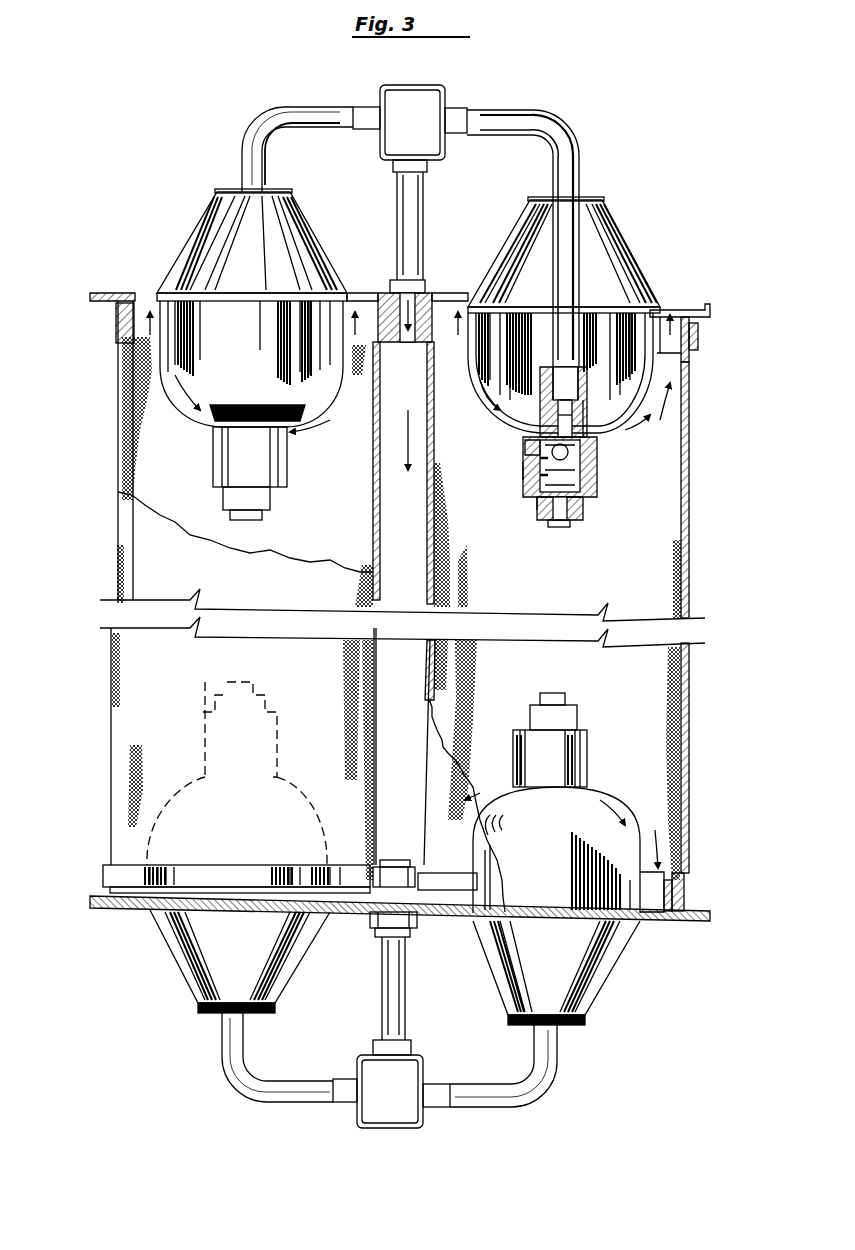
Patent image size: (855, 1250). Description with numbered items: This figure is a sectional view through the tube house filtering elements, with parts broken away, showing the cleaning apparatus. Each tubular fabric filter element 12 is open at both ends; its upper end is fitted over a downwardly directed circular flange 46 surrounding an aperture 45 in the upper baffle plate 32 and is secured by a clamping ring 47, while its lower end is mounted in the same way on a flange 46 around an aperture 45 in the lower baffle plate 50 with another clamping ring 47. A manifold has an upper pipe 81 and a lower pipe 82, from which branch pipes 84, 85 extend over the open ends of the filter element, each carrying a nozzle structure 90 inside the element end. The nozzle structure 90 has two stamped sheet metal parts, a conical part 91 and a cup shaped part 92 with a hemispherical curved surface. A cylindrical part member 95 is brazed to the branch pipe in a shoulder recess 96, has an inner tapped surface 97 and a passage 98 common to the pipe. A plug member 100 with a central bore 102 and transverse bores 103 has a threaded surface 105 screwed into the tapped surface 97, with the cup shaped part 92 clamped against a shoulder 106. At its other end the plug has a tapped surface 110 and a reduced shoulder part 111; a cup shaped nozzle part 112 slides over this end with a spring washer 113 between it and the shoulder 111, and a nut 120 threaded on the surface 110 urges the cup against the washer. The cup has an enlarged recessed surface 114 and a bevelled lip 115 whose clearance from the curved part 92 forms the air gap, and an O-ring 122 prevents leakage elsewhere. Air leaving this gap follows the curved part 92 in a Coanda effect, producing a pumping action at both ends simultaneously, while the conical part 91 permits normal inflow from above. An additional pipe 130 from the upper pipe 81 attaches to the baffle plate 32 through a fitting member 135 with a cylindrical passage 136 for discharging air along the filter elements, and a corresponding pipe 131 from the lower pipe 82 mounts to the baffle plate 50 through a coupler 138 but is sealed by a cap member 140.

The filter element 12 is at (690, 490).
The baffle plate 32 is at (373, 295).
The aperture 45 is at (684, 312).
The circular flange 46 is at (691, 376).
The clamping ring 47 is at (699, 336).
The baffle plate 50 is at (105, 908).
The upper pipe 81 is at (443, 88).
The lower pipe 82 is at (418, 1130).
The branch pipe 84 is at (272, 110).
The branch pipe 85 is at (232, 1082).
The nozzle structure 90 is at (640, 246).
The conical stamped part 91 is at (640, 276).
The cup shaped stamped part 92 is at (570, 372).
The cylindrical part member 95 is at (583, 386).
The shoulder recess 96 is at (578, 372).
The inner tapped surface 97 is at (588, 417).
The passage 98 is at (585, 400).
The plug member 100 is at (557, 448).
The bore 102 is at (588, 428).
The transverse bores 103 is at (597, 473).
The threaded surface 105 is at (540, 406).
The shoulder 106 is at (598, 446).
The tapped surface 110 is at (583, 512).
The shoulder part 111 is at (548, 526).
The cup shaped nozzle part 112 is at (532, 484).
The spring washer 113 is at (537, 503).
The enlarged recessed surface 114 is at (540, 462).
The bevelled lip 115 is at (525, 450).
The nut 120 is at (578, 515).
The O-ring 122 is at (523, 476).
The pipe 130 is at (395, 210).
The pipe 131 is at (380, 1008).
The fitting member 135 is at (432, 300).
The cylindrical passage 136 is at (381, 350).
The coupler 138 is at (413, 938).
The cap member 140 is at (402, 867).